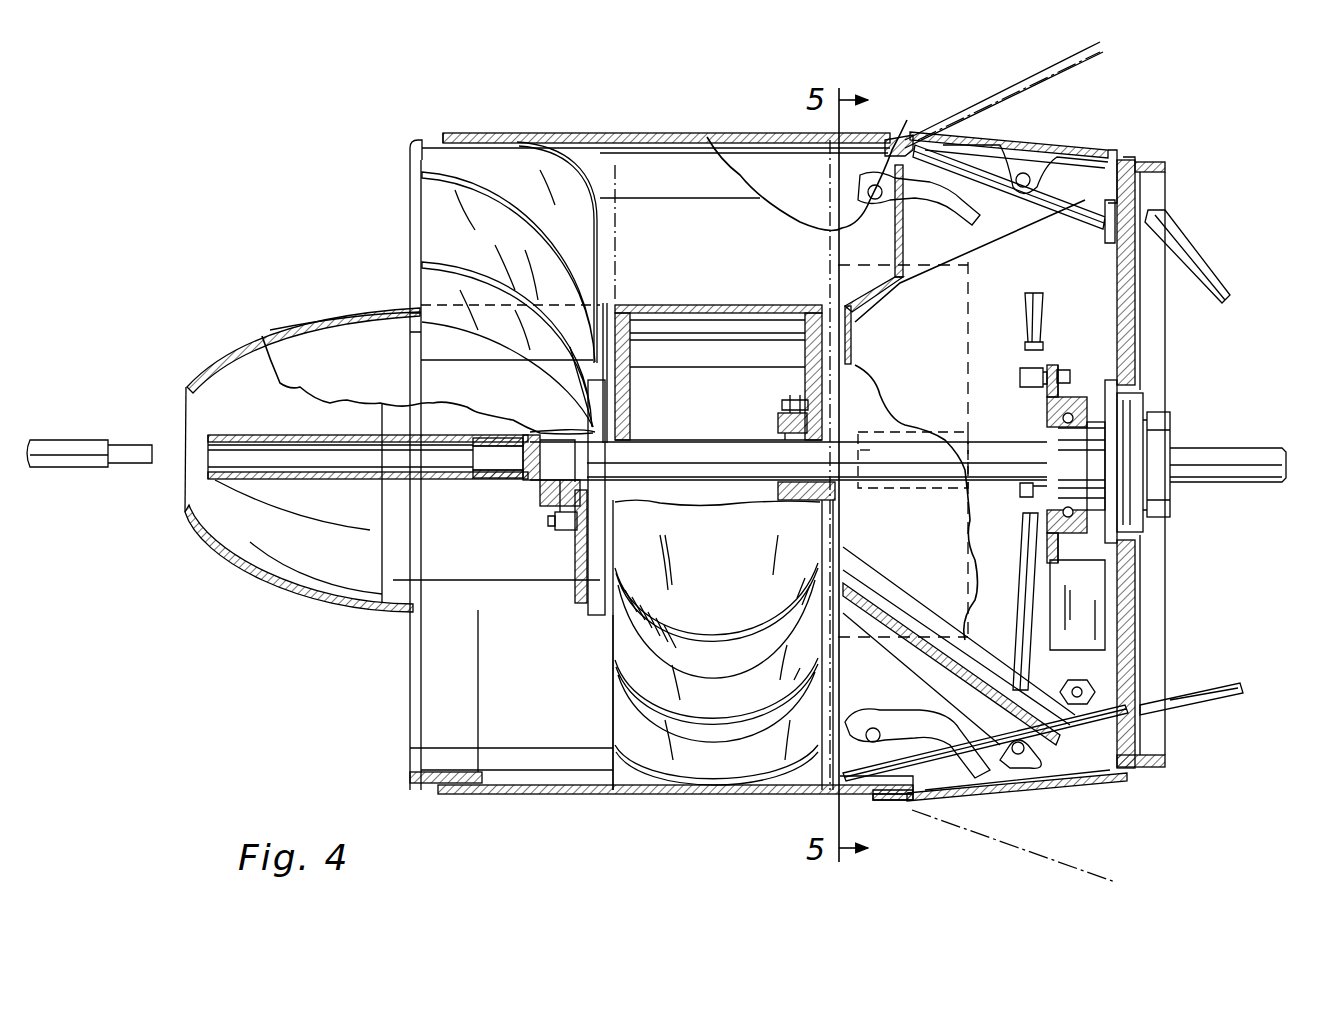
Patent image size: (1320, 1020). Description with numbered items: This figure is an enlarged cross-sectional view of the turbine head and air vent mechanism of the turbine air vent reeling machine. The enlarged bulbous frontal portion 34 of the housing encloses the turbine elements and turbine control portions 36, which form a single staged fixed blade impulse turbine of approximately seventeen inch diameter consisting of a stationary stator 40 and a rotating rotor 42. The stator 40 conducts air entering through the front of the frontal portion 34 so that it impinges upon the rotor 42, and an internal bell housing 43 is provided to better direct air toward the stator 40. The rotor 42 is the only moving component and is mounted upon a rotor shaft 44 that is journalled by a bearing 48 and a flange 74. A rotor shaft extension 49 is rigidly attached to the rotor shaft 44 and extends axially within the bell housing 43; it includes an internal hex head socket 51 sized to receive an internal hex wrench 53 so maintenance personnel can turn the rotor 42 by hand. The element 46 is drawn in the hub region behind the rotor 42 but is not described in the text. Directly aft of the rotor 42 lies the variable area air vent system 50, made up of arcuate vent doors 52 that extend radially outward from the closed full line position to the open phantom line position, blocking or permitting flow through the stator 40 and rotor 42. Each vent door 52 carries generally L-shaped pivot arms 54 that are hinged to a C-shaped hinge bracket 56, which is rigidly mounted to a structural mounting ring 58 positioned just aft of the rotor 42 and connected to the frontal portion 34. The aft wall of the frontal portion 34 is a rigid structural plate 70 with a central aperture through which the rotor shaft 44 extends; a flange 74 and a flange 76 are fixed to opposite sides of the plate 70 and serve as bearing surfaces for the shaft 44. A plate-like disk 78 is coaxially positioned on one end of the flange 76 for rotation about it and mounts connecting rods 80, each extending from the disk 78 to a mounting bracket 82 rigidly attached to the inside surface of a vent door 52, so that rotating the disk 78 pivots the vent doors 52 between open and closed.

The frontal portion 34 is at (738, 150).
The turbine elements and turbine control portions 36 is at (618, 767).
The stator 40 is at (495, 155).
The rotor 42 is at (645, 675).
The bell housing 43 is at (238, 360).
The rotor shaft 44 is at (690, 482).
The hub 46 is at (840, 495).
The bearing 48 is at (532, 490).
The rotor shaft extension 49 is at (358, 470).
The variable area air vent system 50 is at (1078, 128).
The internal hex head socket 51 is at (490, 462).
The vent door 52 is at (1000, 150).
The internal hex wrench 53 is at (102, 462).
The pivot arm 54 is at (950, 205).
The hinge bracket 56 is at (855, 730).
The structural mounting ring 58 is at (895, 140).
The structural plate 70 is at (1140, 592).
The flange 74 is at (1160, 490).
The flange 76 is at (1115, 420).
The disk 78 is at (1047, 405).
The connecting rod 80 is at (1040, 315).
The mounting bracket 82 is at (1045, 175).